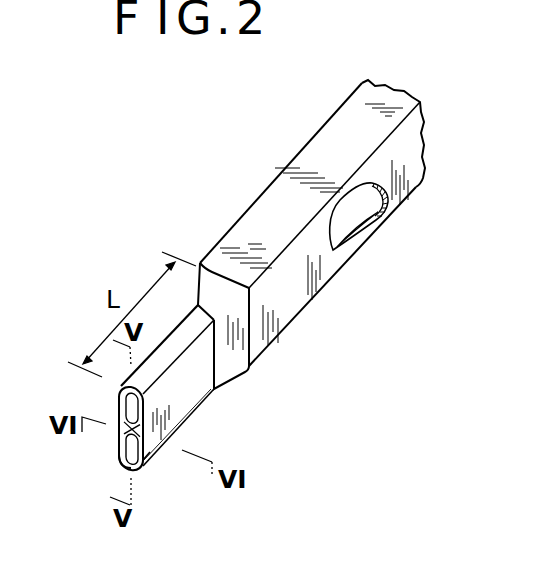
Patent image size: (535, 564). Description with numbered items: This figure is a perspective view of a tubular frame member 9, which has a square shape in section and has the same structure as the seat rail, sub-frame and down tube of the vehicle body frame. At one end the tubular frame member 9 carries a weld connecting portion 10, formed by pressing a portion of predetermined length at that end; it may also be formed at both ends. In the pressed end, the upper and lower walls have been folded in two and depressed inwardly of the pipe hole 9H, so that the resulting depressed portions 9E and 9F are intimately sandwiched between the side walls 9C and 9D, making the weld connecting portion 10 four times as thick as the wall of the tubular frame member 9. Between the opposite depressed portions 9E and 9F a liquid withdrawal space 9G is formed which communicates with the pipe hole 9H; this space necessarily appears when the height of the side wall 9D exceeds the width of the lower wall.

The tubular frame member 9 is at (327, 272).
The pipe hole 9H is at (365, 202).
The weld connecting portion 10 is at (193, 393).
The depressed portion 9E is at (121, 405).
The liquid withdrawal space 9G is at (130, 436).
The side wall 9C is at (130, 441).
The depressed portion 9F is at (121, 463).
The side wall 9D is at (153, 450).